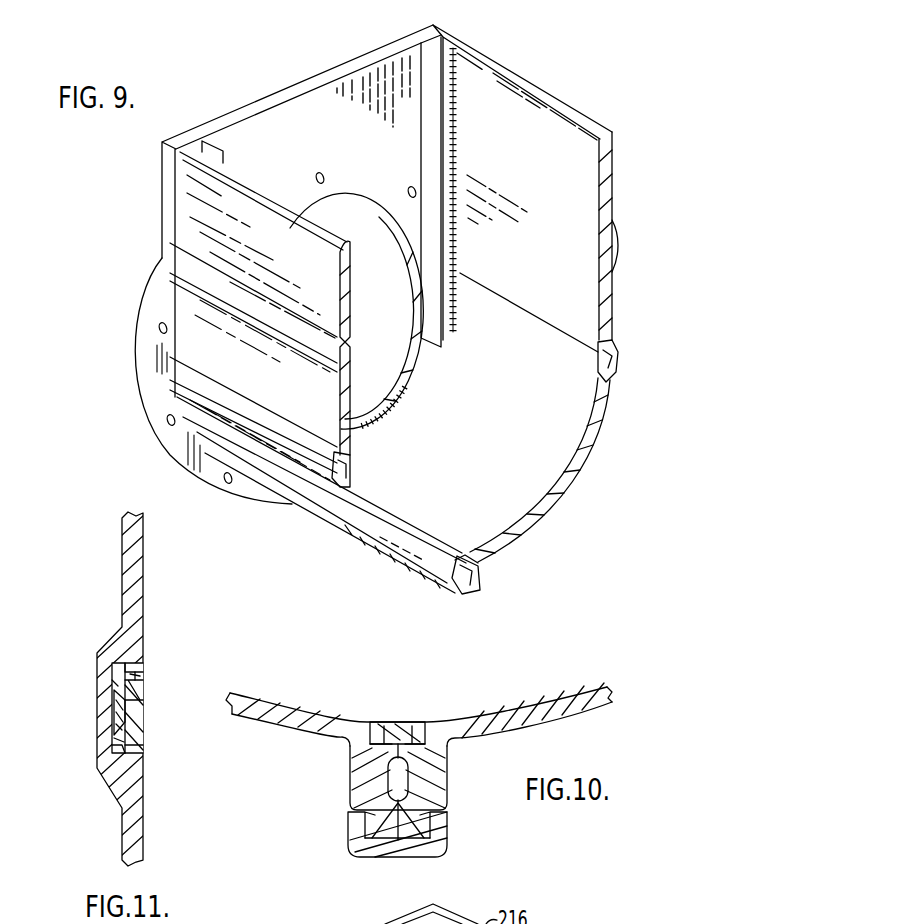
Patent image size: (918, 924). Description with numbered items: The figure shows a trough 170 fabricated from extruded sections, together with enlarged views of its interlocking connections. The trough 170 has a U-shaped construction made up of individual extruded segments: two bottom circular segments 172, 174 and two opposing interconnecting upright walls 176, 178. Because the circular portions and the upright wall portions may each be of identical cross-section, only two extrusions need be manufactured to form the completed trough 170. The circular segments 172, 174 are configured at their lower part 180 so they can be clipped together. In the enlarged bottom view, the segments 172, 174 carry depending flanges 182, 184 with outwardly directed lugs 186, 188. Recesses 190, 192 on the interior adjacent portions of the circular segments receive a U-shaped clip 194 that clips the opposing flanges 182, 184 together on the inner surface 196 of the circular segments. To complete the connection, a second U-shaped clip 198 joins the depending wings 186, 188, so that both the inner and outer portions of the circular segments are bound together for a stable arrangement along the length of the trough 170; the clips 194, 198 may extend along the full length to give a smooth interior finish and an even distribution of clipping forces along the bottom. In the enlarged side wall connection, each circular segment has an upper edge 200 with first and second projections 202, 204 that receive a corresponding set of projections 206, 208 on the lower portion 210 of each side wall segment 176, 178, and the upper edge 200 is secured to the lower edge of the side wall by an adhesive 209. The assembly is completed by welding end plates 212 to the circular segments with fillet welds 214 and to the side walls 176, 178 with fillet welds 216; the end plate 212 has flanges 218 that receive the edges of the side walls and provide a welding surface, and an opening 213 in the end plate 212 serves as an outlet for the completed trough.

In FIG. 9, the trough 170 is at (582, 102).
In FIG. 9, the bottom circular segment 172 is at (538, 465).
In FIG. 10, the bottom circular segment 172 is at (536, 722).
In FIG. 9, the bottom circular segment 174 is at (404, 550).
In FIG. 10, the bottom circular segment 174 is at (283, 725).
In FIG. 9, the upright wall 176 is at (574, 268).
In FIG. 9, the upright wall 178 is at (215, 357).
In FIG. 9, the lower part 180 is at (497, 592).
In FIG. 10, the depending flange 182 is at (440, 775).
In FIG. 10, the depending flange 184 is at (354, 772).
In FIG. 10, the outwardly directed lug 186 is at (413, 845).
In FIG. 10, the outwardly directed lug 188 is at (378, 840).
In FIG. 10, the recess 190 is at (438, 743).
In FIG. 10, the recess 192 is at (358, 768).
In FIG. 9, the U-shaped clip 194 is at (427, 530).
In FIG. 10, the U-shaped clip 194 is at (392, 722).
In FIG. 10, the inner surface 196 is at (426, 720).
In FIG. 9, the U-shaped clip 198 is at (462, 606).
In FIG. 10, the U-shaped clip 198 is at (393, 848).
In FIG. 11, the upper edge 200 is at (141, 719).
In FIG. 11, the first projection 202 is at (128, 672).
In FIG. 11, the second projection 204 is at (110, 742).
In FIG. 11, the projection 206 is at (143, 670).
In FIG. 11, the projection 208 is at (113, 727).
In FIG. 11, the adhesive 209 is at (110, 683).
In FIG. 11, the lower portion 210 is at (94, 632).
In FIG. 9, the end plate 212 is at (274, 125).
In FIG. 9, the opening 213 is at (362, 201).
In FIG. 9, the fillet weld 214 is at (403, 384).
In FIG. 9, the fillet weld 216 is at (460, 90).
In FIG. 9, the flange 218 is at (438, 95).